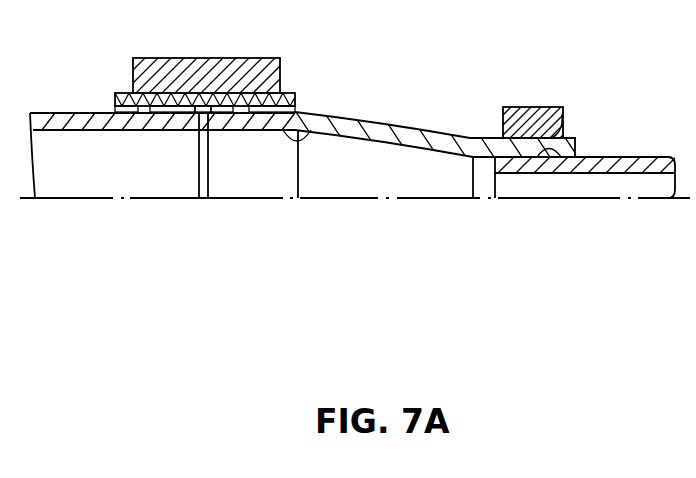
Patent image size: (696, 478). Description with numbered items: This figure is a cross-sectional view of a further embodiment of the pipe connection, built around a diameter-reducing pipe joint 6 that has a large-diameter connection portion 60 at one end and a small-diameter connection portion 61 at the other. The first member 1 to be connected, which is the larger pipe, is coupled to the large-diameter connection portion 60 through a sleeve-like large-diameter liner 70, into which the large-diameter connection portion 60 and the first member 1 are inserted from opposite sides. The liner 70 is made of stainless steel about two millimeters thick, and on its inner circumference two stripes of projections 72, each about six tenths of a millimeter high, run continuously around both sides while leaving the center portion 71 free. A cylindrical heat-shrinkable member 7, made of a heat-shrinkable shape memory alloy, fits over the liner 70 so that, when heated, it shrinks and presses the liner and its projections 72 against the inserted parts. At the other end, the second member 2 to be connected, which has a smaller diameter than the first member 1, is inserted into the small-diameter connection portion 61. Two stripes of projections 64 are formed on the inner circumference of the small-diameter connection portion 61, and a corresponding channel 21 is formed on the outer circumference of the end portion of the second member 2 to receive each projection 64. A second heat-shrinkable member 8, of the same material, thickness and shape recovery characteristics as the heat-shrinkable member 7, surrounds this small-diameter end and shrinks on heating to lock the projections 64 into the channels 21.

The first member to be connected 1 is at (62, 180).
The heat-shrinkable member 7 is at (216, 58).
The large-diameter liner 70 is at (293, 93).
The large-diameter connection portion 60 is at (309, 130).
The center portion 71 is at (188, 112).
The projections 72 is at (176, 112).
The diameter-reducing pipe joint 6 is at (414, 130).
The heat-shrinkable member 8 is at (528, 107).
The small-diameter connection portion 61 is at (565, 110).
The second member to be connected 2 is at (640, 157).
The projections 64 is at (525, 162).
The channel 21 is at (566, 158).